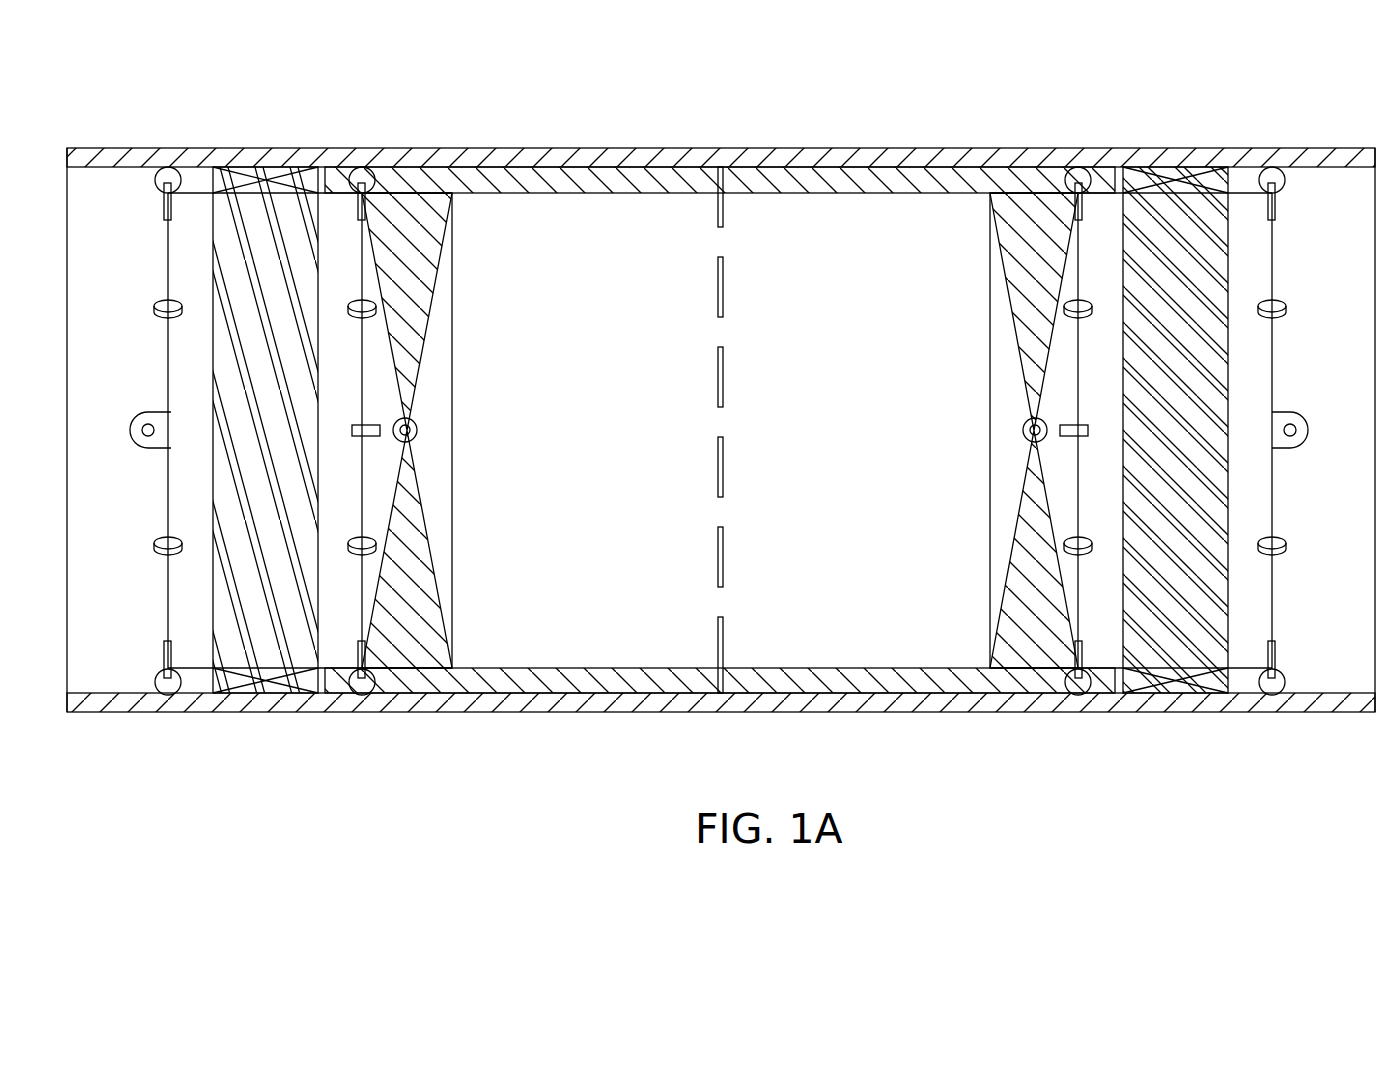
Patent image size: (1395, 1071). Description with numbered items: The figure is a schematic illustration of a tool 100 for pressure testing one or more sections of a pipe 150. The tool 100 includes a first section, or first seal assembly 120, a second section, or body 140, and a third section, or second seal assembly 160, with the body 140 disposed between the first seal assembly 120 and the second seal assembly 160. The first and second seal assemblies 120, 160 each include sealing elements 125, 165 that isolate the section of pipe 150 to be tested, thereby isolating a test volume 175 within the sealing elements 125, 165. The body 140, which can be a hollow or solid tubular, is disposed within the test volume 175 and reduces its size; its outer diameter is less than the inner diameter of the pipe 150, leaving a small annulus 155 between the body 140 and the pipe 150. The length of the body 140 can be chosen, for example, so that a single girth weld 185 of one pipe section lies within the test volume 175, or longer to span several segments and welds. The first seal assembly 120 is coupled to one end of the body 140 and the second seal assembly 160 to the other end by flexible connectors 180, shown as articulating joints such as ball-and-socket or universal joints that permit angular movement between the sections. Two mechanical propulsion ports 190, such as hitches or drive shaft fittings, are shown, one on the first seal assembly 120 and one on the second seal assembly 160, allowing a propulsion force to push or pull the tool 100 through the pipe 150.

The tool 100 is at (1218, 55).
The first seal assembly 120 is at (1285, 735).
The sealing element 125 is at (1185, 180).
The body 140 is at (742, 737).
The pipe 150 is at (120, 158).
The annulus 155 is at (830, 180).
The second seal assembly 160 is at (373, 737).
The sealing element 165 is at (272, 175).
The test volume 175 is at (1040, 208).
The flexible connector 180 is at (417, 428).
The girth weld 185 is at (723, 283).
The mechanical propulsion port 190 is at (1305, 410).